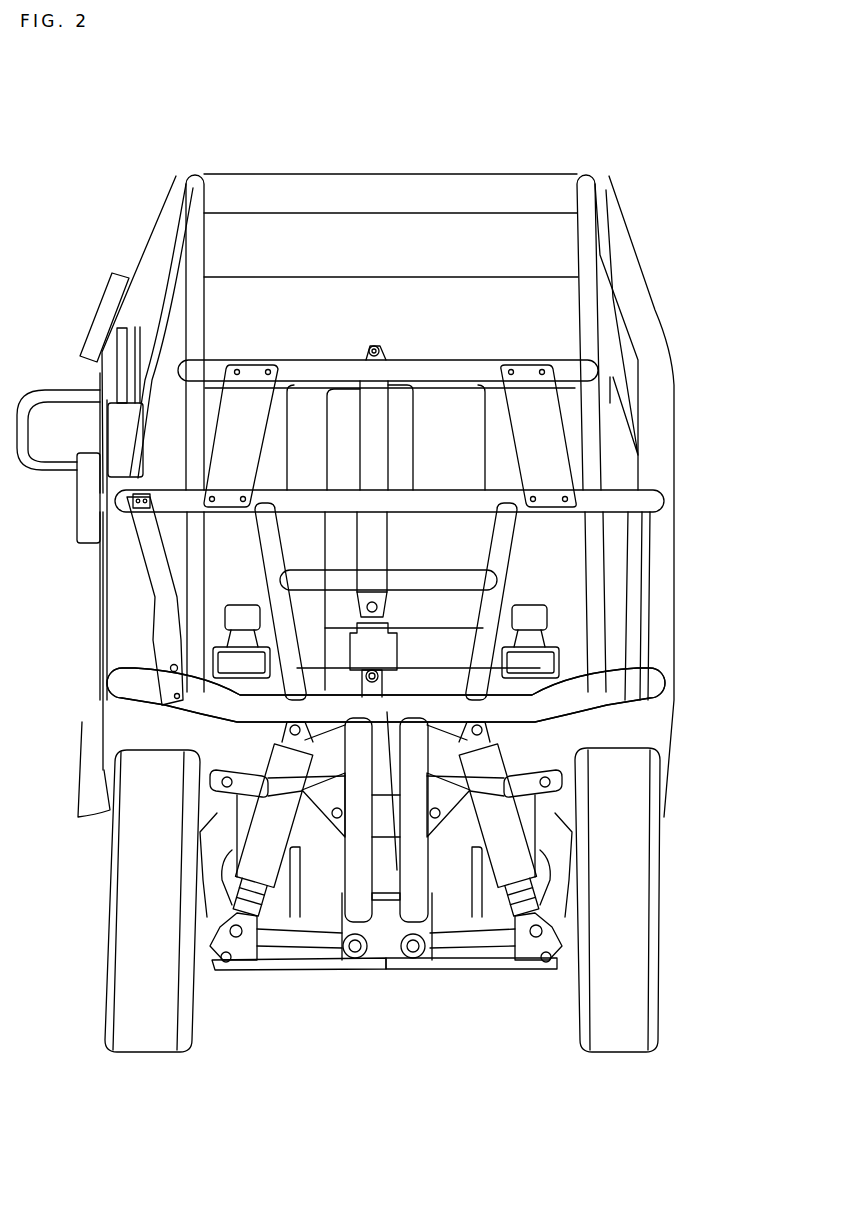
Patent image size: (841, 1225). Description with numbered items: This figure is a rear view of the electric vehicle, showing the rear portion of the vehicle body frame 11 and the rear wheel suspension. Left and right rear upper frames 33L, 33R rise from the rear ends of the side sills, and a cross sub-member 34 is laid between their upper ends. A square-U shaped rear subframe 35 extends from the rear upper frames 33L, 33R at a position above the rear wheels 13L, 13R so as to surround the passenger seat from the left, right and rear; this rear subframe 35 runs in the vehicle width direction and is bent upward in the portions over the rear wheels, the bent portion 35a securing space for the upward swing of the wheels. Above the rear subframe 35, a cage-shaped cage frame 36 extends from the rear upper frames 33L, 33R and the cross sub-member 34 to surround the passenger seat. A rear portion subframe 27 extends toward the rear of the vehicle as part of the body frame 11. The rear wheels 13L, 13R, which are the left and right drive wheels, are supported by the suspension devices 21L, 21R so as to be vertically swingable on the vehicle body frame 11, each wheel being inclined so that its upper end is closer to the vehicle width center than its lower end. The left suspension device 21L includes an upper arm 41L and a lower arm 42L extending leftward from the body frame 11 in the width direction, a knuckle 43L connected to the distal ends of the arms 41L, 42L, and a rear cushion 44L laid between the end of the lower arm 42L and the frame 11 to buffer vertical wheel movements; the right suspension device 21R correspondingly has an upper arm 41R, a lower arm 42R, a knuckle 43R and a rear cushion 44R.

The vehicle body frame 11 is at (692, 674).
The left rear wheel 13L is at (110, 931).
The right rear wheel 13R is at (630, 937).
The left suspension device 21L is at (277, 991).
The right suspension device 21R is at (531, 991).
The rear portion subframe 27 is at (382, 940).
The left rear upper frame 33L is at (108, 604).
The right rear upper frame 33R is at (658, 613).
The cross sub-member 34 is at (376, 196).
The rear subframe 35 is at (413, 935).
The bent portion 35a is at (230, 708).
The cage frame 36 is at (510, 556).
The left upper arm 41L is at (327, 962).
The right upper arm 41R is at (453, 962).
The left lower arm 42L is at (298, 962).
The right lower arm 42R is at (493, 962).
The left knuckle 43L is at (202, 962).
The right knuckle 43R is at (560, 962).
The left rear cushion 44L is at (267, 848).
The right rear cushion 44R is at (507, 818).